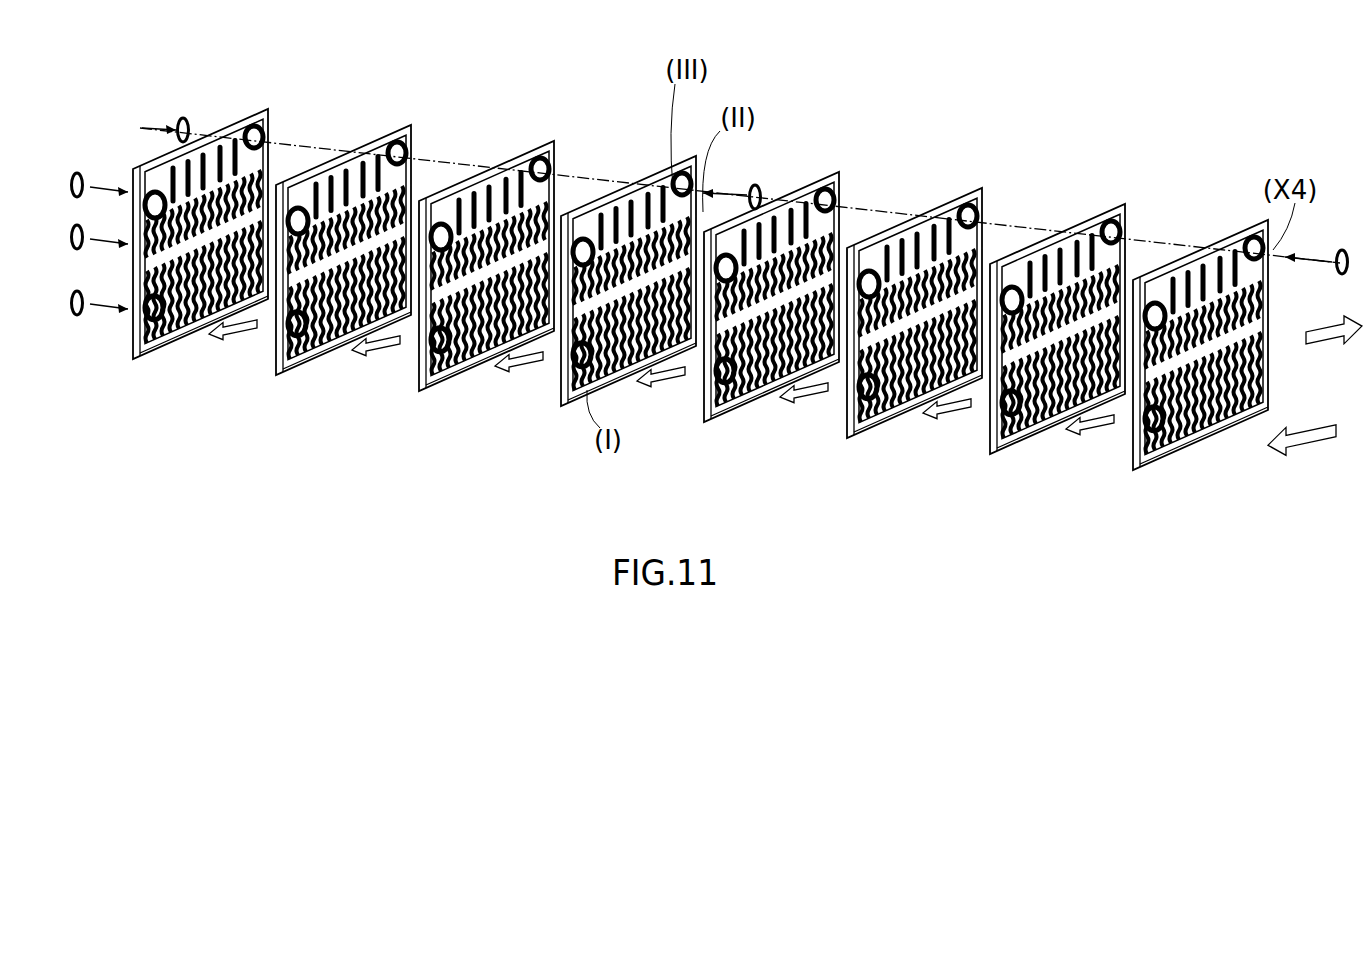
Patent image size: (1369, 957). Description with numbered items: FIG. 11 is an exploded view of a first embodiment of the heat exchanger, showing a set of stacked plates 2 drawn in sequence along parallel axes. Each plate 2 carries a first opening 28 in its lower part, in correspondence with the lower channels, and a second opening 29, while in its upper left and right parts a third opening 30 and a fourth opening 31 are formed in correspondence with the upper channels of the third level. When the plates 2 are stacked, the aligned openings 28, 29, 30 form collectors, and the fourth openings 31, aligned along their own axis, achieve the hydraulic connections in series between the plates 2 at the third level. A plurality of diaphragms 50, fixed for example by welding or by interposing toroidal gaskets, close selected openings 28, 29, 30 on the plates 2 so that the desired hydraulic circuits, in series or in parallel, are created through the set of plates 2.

The plate 2 is at (515, 158).
The first opening 28 is at (143, 357).
The second opening 29 is at (134, 280).
The third opening 30 is at (296, 208).
The fourth opening 31 is at (266, 108).
The diaphragm 50 is at (172, 129).